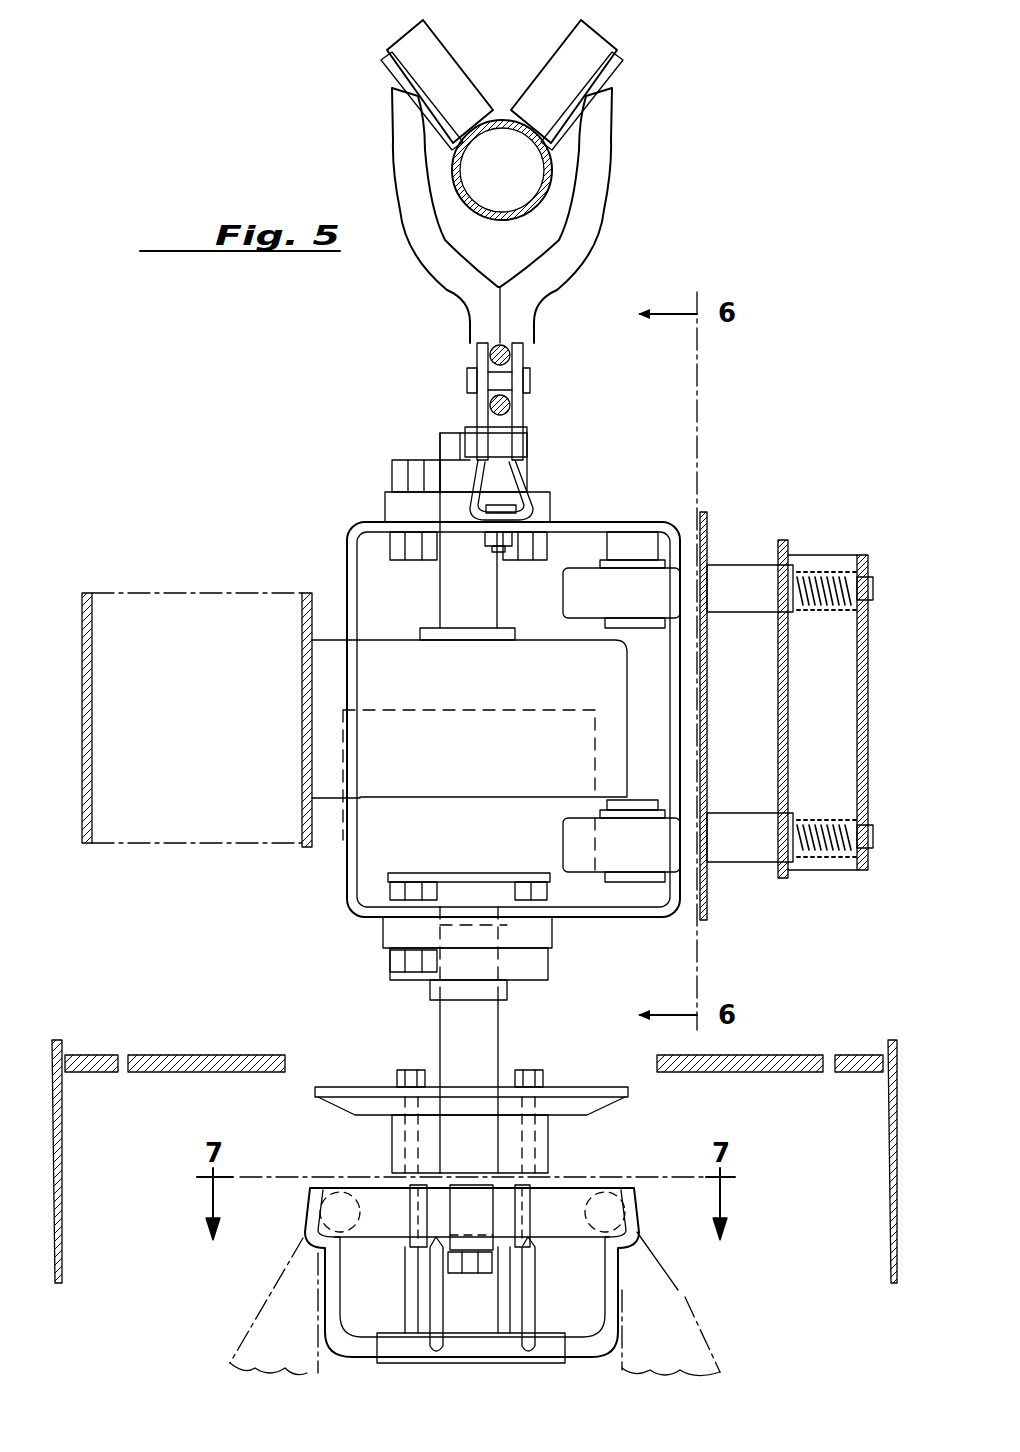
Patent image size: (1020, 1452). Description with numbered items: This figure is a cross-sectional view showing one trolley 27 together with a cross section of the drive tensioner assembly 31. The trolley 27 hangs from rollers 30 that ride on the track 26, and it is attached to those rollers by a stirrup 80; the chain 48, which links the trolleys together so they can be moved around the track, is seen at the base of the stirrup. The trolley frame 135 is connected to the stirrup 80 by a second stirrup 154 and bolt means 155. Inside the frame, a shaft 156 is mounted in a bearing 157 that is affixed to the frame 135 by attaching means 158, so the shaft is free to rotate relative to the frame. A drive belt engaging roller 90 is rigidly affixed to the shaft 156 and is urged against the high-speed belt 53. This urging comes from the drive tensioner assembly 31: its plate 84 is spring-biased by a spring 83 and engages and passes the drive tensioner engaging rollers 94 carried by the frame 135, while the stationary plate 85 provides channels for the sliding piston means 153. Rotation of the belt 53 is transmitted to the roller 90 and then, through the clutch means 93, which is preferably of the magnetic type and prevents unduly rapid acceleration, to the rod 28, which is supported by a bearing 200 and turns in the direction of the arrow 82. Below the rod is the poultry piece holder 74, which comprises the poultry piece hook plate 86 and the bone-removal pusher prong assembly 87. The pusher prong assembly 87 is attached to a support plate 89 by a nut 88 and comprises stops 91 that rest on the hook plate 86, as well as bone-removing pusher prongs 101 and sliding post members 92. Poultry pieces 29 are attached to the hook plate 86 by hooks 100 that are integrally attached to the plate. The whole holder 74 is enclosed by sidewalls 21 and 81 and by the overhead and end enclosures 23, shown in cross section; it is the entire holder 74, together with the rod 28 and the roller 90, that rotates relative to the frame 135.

The sidewall 21 is at (888, 1153).
The overhead and end enclosures 23 is at (245, 1055).
The track 26 is at (505, 220).
The trolley 27 is at (305, 528).
The rod 28 is at (480, 1025).
The poultry pieces 29 is at (270, 1313).
The rollers 30 is at (548, 72).
The drive tensioner assembly 31 is at (873, 700).
The chain 48 is at (512, 403).
The high-speed belt 53 is at (90, 665).
The poultry piece holder 74 is at (485, 1200).
The stirrup 80 is at (595, 200).
The sidewall 81 is at (62, 1170).
The arrow 82 is at (448, 1057).
The spring 83 is at (830, 575).
The plate 84 is at (708, 702).
The plate 85 is at (790, 702).
The poultry piece hook plate 86 is at (605, 1248).
The bone-removal pusher prong assembly 87 is at (405, 1352).
The nut 88 is at (405, 1072).
The support plate 89 is at (345, 1105).
The drive belt engaging roller 90 is at (430, 770).
The stops 91 is at (410, 1222).
The sliding post members 92 is at (410, 1275).
The clutch means 93 is at (461, 855).
The drive tensioner engaging rollers 94 is at (588, 605).
The hooks 100 is at (460, 1195).
The bone-removing pusher prongs 101 is at (435, 1297).
The trolley frame 135 is at (360, 525).
The sliding piston means 153 is at (738, 575).
The second stirrup 154 is at (525, 480).
The bolt means 155 is at (503, 560).
The shaft 156 is at (462, 578).
The bearing 157 is at (458, 470).
The attaching means 158 is at (410, 478).
The bearing 200 is at (430, 990).